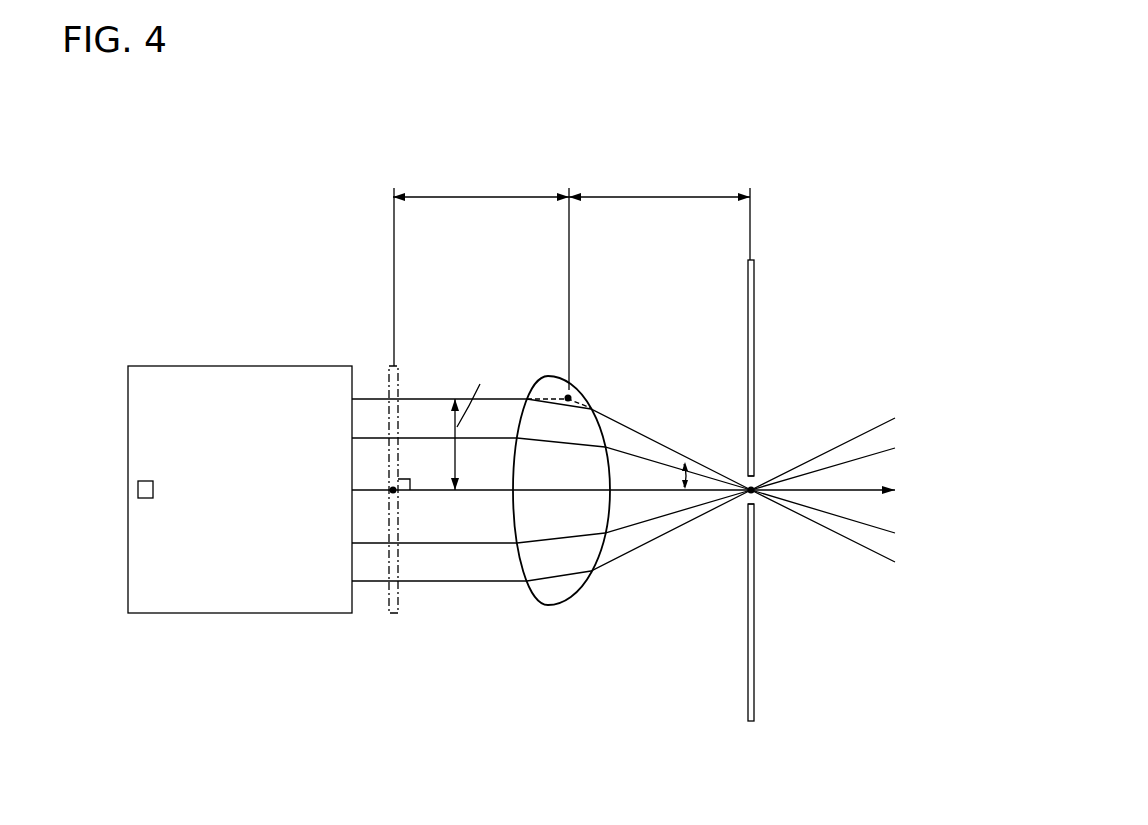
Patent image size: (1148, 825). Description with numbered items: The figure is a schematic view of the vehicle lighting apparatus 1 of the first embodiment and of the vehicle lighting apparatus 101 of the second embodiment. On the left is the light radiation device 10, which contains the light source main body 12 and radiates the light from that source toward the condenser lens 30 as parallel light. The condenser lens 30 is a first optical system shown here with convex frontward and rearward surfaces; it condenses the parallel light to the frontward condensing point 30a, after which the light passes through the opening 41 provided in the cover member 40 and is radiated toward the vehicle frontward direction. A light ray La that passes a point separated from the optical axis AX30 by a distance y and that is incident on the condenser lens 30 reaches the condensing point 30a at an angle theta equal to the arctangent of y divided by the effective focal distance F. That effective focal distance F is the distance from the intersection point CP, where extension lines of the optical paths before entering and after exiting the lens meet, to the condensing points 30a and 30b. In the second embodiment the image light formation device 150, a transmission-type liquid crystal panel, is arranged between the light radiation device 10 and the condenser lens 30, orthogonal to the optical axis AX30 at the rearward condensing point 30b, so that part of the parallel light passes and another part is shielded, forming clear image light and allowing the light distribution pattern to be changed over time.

The vehicle lighting apparatus 1 is at (506, 400).
The vehicle lighting apparatus 101 is at (934, 110).
The light radiation device 10 is at (253, 356).
The light source main body 12 is at (145, 480).
The image light formation device 150 is at (408, 362).
The condenser lens 30 is at (546, 364).
The condensing point 30a is at (748, 494).
The condensing point 30b is at (396, 492).
The cover member 40 is at (765, 288).
The opening 41 is at (757, 475).
The light La is at (432, 399).
The intersection point CP is at (572, 396).
The optical axis AX30 is at (486, 494).